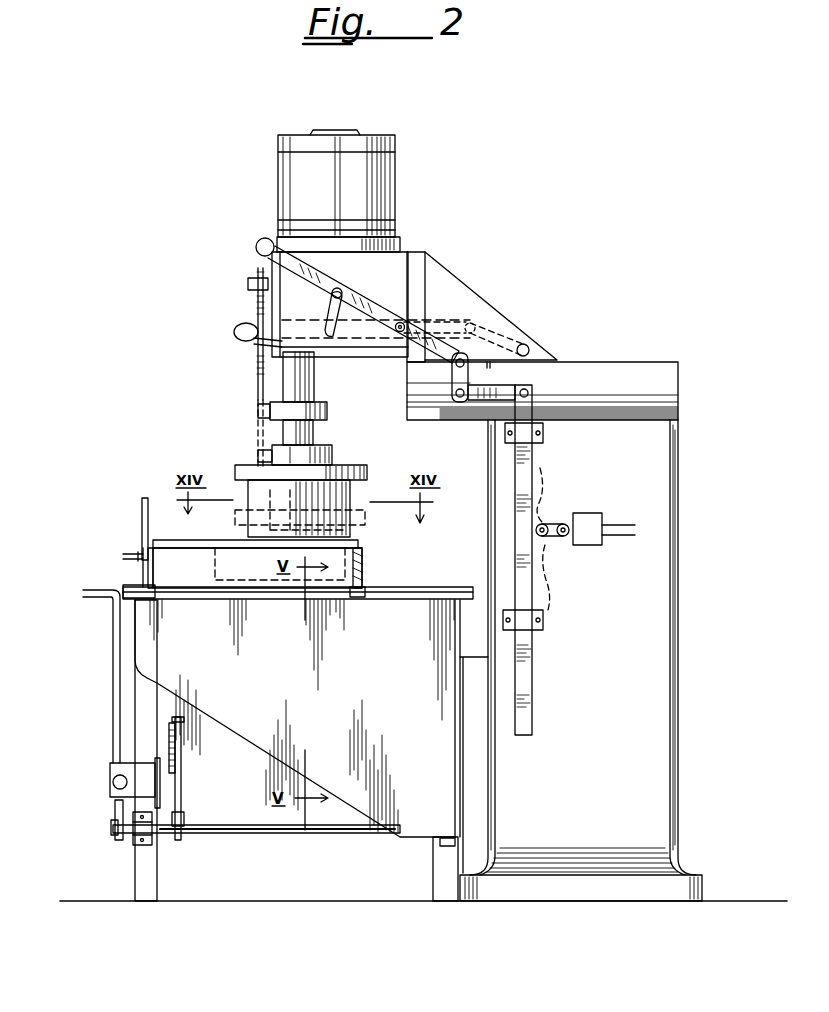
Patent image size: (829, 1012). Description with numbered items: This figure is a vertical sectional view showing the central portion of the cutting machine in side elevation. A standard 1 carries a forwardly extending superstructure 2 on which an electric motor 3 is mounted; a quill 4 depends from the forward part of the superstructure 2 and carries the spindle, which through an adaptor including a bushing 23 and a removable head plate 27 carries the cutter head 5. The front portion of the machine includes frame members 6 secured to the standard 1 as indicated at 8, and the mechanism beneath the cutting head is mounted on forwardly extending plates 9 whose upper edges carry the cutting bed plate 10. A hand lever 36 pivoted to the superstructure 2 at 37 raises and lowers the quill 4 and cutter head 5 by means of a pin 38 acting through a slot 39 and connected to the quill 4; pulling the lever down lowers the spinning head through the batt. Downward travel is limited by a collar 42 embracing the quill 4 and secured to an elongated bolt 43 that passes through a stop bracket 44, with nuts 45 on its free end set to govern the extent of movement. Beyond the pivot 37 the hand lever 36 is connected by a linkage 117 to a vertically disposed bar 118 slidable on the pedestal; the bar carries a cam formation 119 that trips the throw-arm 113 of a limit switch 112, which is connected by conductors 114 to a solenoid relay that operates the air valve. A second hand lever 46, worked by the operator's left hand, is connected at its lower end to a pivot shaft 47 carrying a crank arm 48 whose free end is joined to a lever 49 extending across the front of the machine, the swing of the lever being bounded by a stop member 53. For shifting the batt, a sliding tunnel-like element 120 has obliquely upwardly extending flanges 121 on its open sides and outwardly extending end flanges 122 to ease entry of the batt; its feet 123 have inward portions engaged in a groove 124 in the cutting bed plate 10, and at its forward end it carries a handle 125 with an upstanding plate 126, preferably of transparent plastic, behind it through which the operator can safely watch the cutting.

The standard 1 is at (662, 678).
The superstructure 2 is at (400, 288).
The electric motor 3 is at (372, 201).
The quill 4 is at (307, 381).
The cutter head 5 is at (353, 497).
The frame members 6 is at (148, 895).
The securing connection to the standard 8 is at (481, 600).
The forwardly extending plates 9 is at (362, 794).
The cutting bed plate 10 is at (418, 596).
The bushing 23 is at (315, 437).
The head plate 27 is at (338, 462).
The hand lever 36 is at (320, 284).
The pivot 37 is at (412, 320).
The pin 38 is at (341, 291).
The slot 39 is at (326, 303).
The collar 42 is at (318, 411).
The elongated bolt 43 is at (258, 375).
The stop bracket 44 is at (240, 345).
The nuts 45 is at (248, 286).
The hand lever 46 is at (113, 626).
The pivot shaft 47 is at (210, 840).
The crank arm 48 is at (181, 793).
The lever 49 is at (178, 748).
The stop member 53 is at (114, 782).
The limit switch 112 is at (592, 546).
The throw-arm 113 is at (556, 540).
The conductors 114 is at (622, 528).
The linkage 117 is at (478, 404).
The vertically disposed bar 118 is at (525, 472).
The cam formation 119 is at (548, 500).
The tunnel-like element 120 is at (158, 570).
The flanges 121 is at (215, 541).
The end flanges 122 is at (362, 562).
The feet 123 is at (153, 602).
The groove 124 is at (262, 598).
The handle 125 is at (123, 556).
The upstanding plate 126 is at (142, 520).